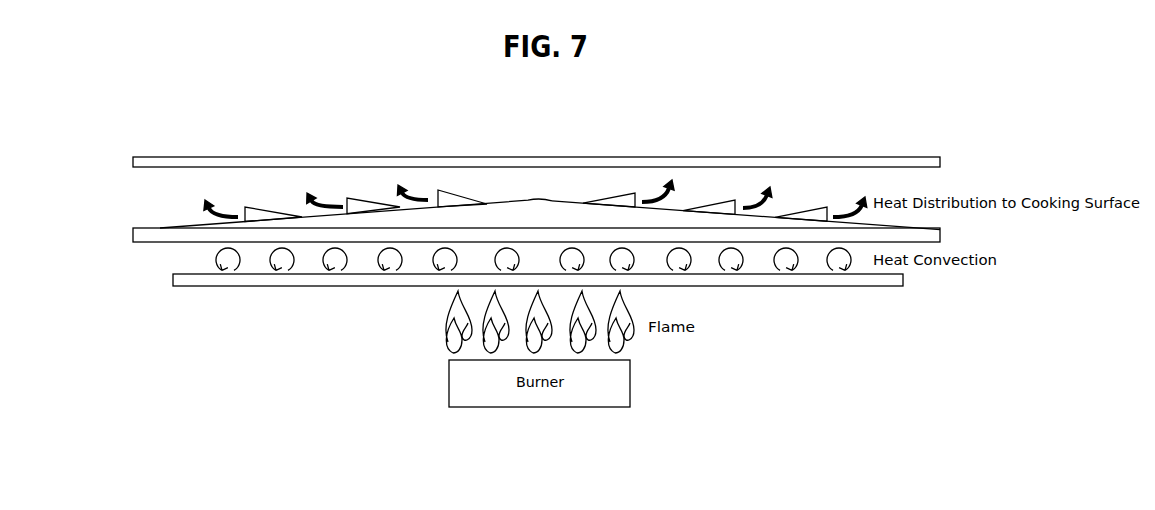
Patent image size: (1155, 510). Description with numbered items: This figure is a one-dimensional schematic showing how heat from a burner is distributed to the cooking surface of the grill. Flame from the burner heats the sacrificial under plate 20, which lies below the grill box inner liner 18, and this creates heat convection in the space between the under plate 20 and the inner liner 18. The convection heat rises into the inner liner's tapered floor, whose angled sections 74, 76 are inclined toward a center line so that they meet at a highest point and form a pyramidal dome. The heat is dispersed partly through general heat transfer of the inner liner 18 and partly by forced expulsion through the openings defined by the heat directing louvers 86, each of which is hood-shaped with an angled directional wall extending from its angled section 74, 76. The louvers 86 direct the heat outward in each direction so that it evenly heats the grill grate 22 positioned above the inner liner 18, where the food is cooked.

The grill grate 22 is at (133, 161).
The grill box inner liner 18 is at (133, 235).
The sacrificial under plate 20 is at (173, 281).
The angled section 76 is at (433, 213).
The angled section 74 is at (766, 217).
The heat directing louver 86 is at (614, 192).